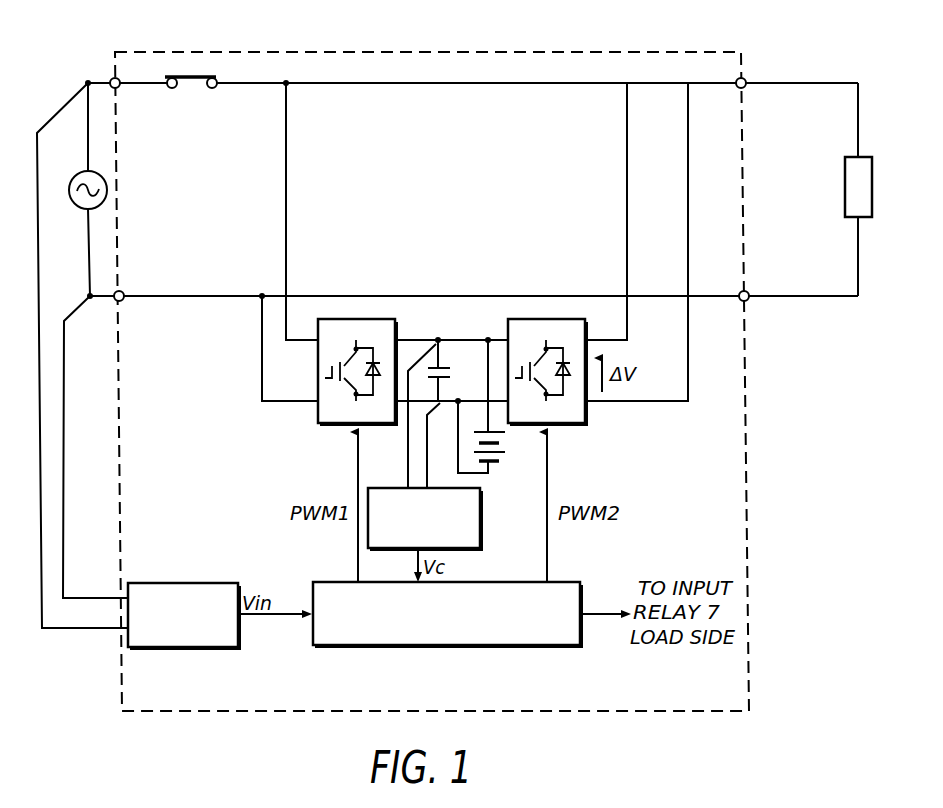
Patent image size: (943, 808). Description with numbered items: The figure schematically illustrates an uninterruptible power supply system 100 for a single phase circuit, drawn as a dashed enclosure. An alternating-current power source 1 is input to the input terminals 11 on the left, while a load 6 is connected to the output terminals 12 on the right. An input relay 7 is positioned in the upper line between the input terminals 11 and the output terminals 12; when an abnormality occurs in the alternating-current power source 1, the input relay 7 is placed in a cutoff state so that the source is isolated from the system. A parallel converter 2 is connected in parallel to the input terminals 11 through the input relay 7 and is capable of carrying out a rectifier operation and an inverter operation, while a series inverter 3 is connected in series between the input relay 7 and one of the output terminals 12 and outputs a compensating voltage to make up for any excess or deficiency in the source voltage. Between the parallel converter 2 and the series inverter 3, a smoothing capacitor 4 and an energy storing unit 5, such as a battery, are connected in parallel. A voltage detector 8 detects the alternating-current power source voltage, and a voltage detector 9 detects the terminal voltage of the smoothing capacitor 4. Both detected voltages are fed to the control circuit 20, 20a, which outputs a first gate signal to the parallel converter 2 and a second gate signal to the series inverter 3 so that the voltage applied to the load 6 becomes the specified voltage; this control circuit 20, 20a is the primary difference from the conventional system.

The alternating-current power source 1 is at (105, 184).
The parallel converter 2 is at (330, 425).
The series inverter 3 is at (568, 425).
The smoothing capacitor 4 is at (448, 362).
The energy storing unit 5 is at (500, 450).
The load 6 is at (845, 197).
The input relay 7 is at (192, 75).
The voltage detector 8 is at (160, 582).
The voltage detector 9 is at (385, 486).
The input terminals 11 is at (118, 88).
The output terminals 12 is at (745, 79).
The control circuit 20 is at (447, 636).
The control circuit 20a is at (452, 647).
The uninterruptible power supply system 100 is at (365, 52).